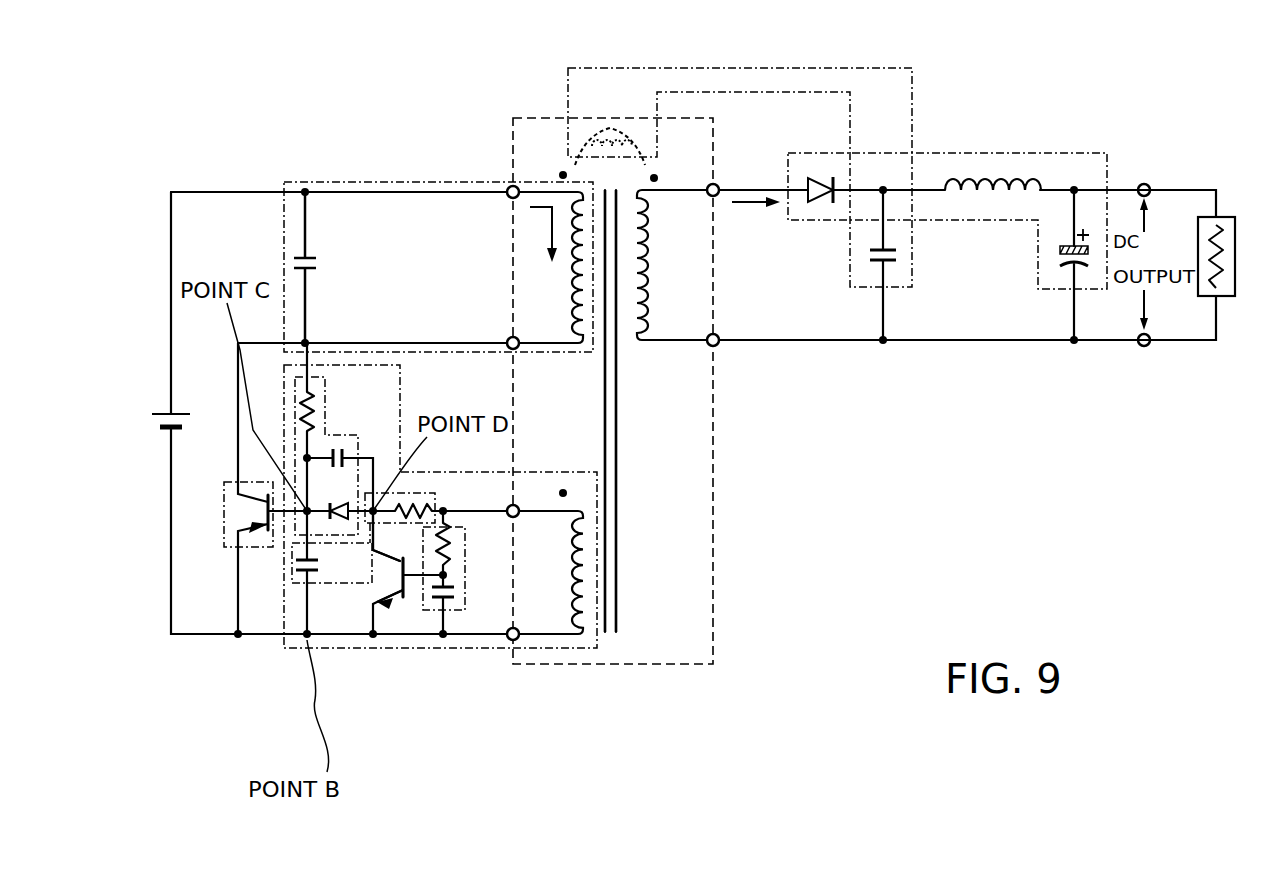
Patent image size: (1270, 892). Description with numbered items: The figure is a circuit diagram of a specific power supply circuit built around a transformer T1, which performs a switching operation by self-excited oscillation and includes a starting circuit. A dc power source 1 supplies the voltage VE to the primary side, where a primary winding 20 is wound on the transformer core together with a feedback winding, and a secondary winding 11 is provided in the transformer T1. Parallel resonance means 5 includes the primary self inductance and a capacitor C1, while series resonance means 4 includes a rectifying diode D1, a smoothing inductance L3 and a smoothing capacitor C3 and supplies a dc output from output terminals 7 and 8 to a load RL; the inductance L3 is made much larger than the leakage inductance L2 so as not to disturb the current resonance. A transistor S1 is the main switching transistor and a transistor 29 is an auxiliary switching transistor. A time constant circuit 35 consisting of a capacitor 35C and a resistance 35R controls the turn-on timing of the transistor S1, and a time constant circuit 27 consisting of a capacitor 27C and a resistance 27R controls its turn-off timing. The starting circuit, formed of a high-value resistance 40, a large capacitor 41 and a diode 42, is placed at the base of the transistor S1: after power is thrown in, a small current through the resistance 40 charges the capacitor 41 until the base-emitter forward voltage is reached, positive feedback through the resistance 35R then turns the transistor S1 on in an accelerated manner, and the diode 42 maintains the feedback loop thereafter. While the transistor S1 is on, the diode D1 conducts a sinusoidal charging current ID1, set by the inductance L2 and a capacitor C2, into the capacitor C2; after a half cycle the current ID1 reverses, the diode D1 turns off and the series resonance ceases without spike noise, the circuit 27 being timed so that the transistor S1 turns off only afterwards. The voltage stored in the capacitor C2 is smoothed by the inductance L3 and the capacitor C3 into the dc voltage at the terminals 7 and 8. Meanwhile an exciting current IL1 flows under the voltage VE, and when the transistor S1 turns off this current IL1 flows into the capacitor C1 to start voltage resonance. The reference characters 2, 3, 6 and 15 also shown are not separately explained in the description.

The dc power source 1 is at (167, 433).
The switching transistor 2 is at (224, 500).
The smoothing circuit 3 is at (1068, 151).
The series resonance means 4 is at (805, 67).
The parallel resonance means 5 is at (343, 182).
The feedback / control circuit 6 is at (573, 650).
The output terminal 7 is at (1144, 182).
The output terminal 8 is at (1144, 347).
The secondary winding 11 is at (640, 284).
The control circuit 15 is at (400, 370).
The primary winding 20 is at (578, 285).
The time constant circuit 27 is at (428, 610).
The capacitor 27C is at (450, 607).
The resistance 27R is at (447, 555).
The auxiliary switching transistor 29 is at (397, 600).
The time constant circuit 35 is at (358, 583).
The capacitor 35C is at (293, 583).
The resistance 35R is at (420, 500).
The resistance 40 is at (312, 398).
The capacitor 41 is at (340, 450).
The diode 42 is at (338, 520).
The capacitor C1 is at (312, 259).
The capacitor C2 is at (870, 262).
The smoothing capacitor C3 is at (1062, 258).
The rectifying diode D1 is at (818, 182).
The leakage inductance L2 is at (610, 128).
The smoothing inductance L3 is at (990, 180).
The load RL is at (1230, 296).
The main switching transistor S1 is at (227, 527).
The transformer T1 is at (611, 650).
The voltage VE is at (151, 421).
The exciting current IL1 is at (548, 228).
The charging current ID1 is at (750, 207).